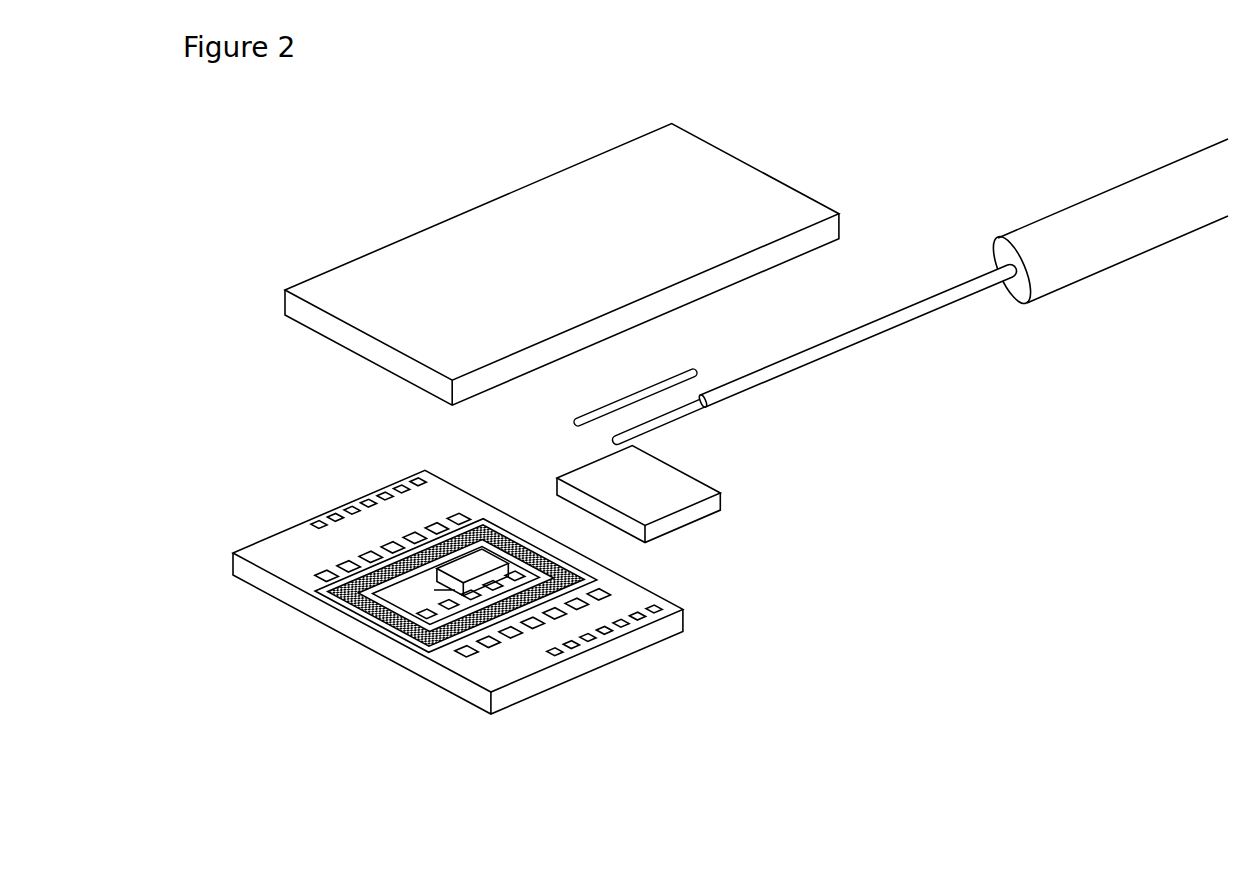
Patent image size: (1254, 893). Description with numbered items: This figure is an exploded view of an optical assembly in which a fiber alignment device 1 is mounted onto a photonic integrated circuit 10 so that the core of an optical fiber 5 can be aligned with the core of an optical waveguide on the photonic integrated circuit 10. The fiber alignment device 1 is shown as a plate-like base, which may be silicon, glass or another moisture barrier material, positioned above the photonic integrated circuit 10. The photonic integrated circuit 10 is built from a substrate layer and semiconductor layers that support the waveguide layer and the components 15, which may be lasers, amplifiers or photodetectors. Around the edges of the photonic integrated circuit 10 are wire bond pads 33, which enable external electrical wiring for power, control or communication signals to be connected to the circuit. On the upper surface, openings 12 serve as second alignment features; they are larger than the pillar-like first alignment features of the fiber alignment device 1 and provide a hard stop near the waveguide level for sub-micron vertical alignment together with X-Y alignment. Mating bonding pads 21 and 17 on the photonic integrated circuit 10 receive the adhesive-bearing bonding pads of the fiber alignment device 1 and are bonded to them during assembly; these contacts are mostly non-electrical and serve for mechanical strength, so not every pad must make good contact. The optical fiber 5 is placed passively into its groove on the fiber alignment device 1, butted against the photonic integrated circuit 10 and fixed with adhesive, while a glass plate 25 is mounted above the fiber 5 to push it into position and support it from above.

The fiber alignment device 1 is at (442, 248).
The photonic integrated circuit 10 is at (283, 537).
The wire bond pads 33 is at (405, 484).
The mating bonding pad 17 is at (492, 522).
The components 15 is at (478, 557).
The second alignment features 12 is at (337, 553).
The mating bonding pad 21 is at (357, 600).
The glass plate 25 is at (677, 502).
The optical fiber 5 is at (862, 342).